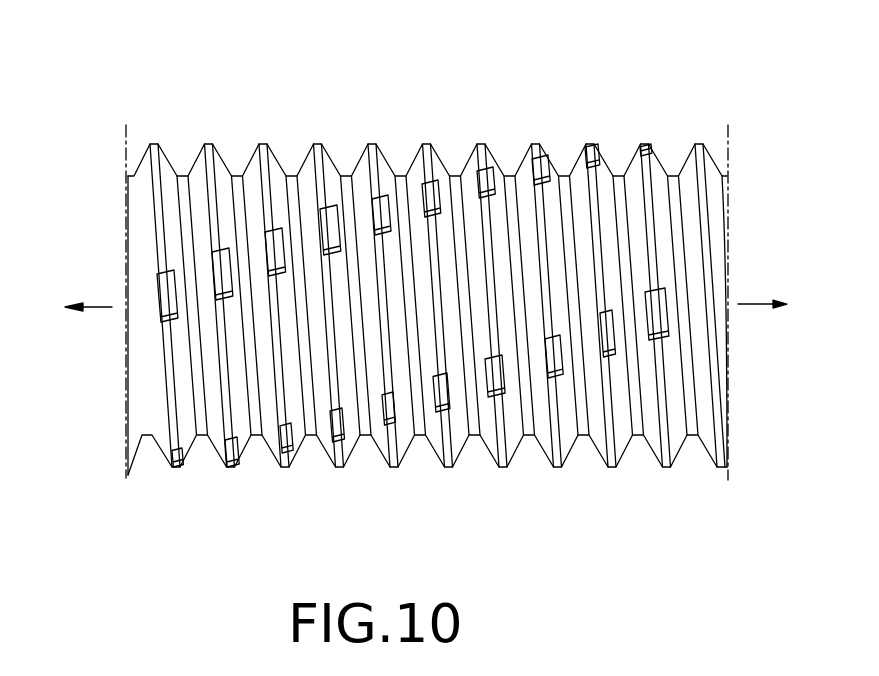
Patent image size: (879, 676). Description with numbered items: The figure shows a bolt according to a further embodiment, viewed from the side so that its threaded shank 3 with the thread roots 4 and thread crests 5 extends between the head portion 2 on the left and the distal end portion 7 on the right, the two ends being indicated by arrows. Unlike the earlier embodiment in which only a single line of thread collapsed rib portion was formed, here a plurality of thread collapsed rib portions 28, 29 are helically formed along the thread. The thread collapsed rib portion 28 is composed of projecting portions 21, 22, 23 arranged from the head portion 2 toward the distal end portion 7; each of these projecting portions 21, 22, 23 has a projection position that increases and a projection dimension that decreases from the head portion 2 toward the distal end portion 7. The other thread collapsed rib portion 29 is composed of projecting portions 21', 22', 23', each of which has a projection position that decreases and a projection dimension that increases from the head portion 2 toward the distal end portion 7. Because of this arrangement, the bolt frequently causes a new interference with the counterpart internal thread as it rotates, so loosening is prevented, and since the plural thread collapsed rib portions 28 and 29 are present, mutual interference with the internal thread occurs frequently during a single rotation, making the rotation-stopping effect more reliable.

The head portion 2 is at (78, 309).
The threaded shank 3 is at (130, 203).
The thread root 4 is at (200, 178).
The thread crest 5 is at (275, 172).
The distal end portion 7 is at (775, 304).
The projecting portion 21 is at (291, 187).
The projecting portion 22 is at (346, 177).
The projecting portion 23 is at (397, 167).
The projecting portion 21' is at (313, 480).
The projecting portion 22' is at (369, 473).
The projecting portion 23' is at (425, 465).
The thread collapsed rib portion 28 is at (548, 170).
The thread collapsed rib portion 29 is at (553, 365).